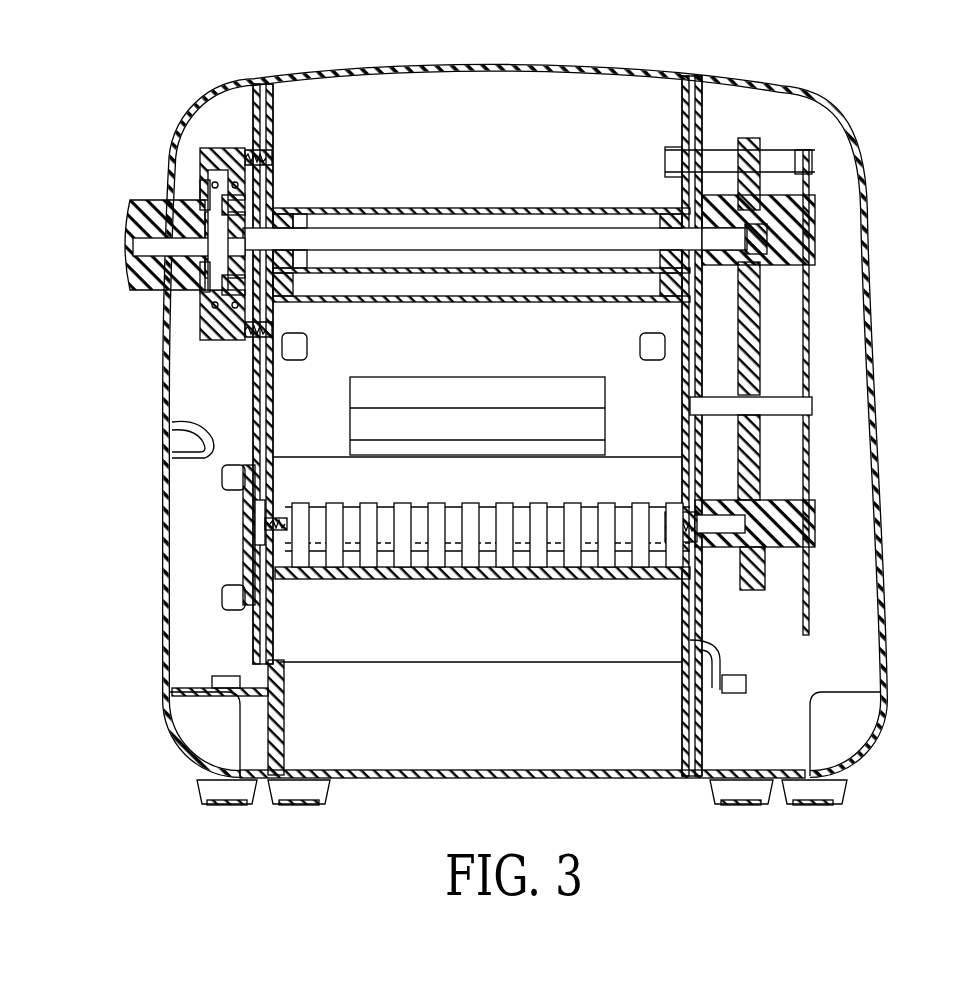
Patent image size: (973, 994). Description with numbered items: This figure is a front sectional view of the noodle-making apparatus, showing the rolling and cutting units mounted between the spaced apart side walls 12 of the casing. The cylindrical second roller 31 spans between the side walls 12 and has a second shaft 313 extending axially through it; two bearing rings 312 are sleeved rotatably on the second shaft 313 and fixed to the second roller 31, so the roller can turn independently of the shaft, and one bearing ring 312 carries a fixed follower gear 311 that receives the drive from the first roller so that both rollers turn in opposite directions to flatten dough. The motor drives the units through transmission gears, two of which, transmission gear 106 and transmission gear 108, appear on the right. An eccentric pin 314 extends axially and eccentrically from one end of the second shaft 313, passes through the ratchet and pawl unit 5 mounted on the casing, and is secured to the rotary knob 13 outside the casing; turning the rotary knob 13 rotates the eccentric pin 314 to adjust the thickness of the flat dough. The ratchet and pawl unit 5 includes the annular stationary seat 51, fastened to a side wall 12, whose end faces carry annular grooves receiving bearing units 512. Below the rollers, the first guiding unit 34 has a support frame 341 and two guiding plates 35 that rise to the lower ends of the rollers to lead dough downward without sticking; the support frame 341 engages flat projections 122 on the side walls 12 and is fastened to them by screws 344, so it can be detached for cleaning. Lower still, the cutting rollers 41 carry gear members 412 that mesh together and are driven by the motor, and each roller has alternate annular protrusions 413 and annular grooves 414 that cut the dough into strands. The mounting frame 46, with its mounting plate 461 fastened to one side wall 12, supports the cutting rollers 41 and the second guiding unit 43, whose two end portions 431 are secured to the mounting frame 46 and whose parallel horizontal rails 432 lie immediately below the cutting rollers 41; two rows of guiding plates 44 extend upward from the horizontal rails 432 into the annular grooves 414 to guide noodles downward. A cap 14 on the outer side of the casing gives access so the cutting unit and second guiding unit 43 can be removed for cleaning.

The ratchet and pawl unit 5 is at (215, 145).
The annular stationary seat 51 is at (225, 148).
The bearing unit 512 is at (242, 150).
The side walls 12 is at (270, 130).
The rotary knob 13 is at (128, 227).
The cap 14 is at (163, 465).
The second roller 31 is at (545, 287).
The follower gear 311 is at (275, 210).
The bearing rings 312 is at (298, 212).
The second shaft 313 is at (402, 237).
The eccentric pin 314 is at (147, 245).
The first guiding unit 34 is at (685, 215).
The support frame 341 is at (252, 345).
The screws 344 is at (702, 367).
The guiding plates 35 is at (582, 297).
The transmission gear 106 is at (757, 193).
The flat projection 122 is at (760, 290).
The transmission gear 108 is at (765, 570).
The cutting rollers 41 is at (243, 492).
The gear members 412 is at (253, 508).
The annular protrusions 413 is at (630, 500).
The annular grooves 414 is at (655, 487).
The second guiding unit 43 is at (252, 632).
The end portions 431 is at (250, 563).
The horizontal rails 432 is at (355, 578).
The guiding plates 44 is at (555, 552).
The mounting frame 46 is at (250, 520).
The mounting plate 461 is at (250, 462).